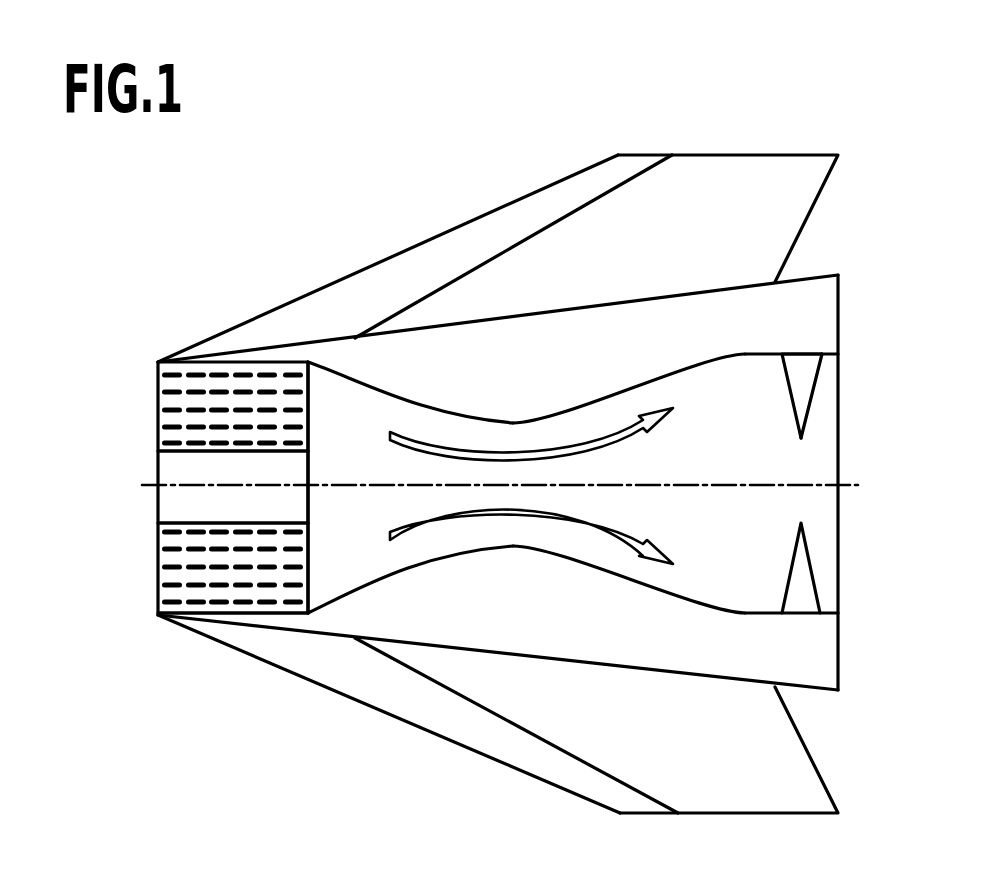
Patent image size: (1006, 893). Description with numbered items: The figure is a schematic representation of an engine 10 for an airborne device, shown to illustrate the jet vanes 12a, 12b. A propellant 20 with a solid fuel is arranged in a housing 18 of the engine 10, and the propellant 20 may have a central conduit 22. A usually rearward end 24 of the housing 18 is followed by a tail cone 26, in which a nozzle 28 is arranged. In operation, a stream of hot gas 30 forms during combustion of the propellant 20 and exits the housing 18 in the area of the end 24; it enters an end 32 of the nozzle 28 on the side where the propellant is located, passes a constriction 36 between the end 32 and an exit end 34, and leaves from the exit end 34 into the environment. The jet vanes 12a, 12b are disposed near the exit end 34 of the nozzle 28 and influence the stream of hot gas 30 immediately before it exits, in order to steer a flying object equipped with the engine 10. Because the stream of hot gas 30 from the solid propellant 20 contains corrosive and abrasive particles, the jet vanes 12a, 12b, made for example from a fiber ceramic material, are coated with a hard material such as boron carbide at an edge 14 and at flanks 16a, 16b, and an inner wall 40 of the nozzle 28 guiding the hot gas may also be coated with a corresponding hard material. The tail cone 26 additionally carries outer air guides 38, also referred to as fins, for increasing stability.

The engine 10 is at (445, 163).
The jet vane 12a is at (797, 411).
The jet vane 12b is at (800, 573).
The edge 14 is at (801, 438).
The flank 16a is at (790, 398).
The flank 16b is at (817, 388).
The housing 18 is at (243, 617).
The propellant 20 is at (170, 567).
The central conduit 22 is at (178, 513).
The rearward end 24 is at (310, 403).
The tail cone 26 is at (792, 314).
The nozzle 28 is at (760, 588).
The stream of hot gas 30 is at (573, 523).
The end of the nozzle 32 is at (310, 568).
The exit end 34 is at (838, 505).
The constriction 36 is at (460, 555).
The outer air guides 38 is at (703, 174).
The inner wall 40 is at (653, 583).